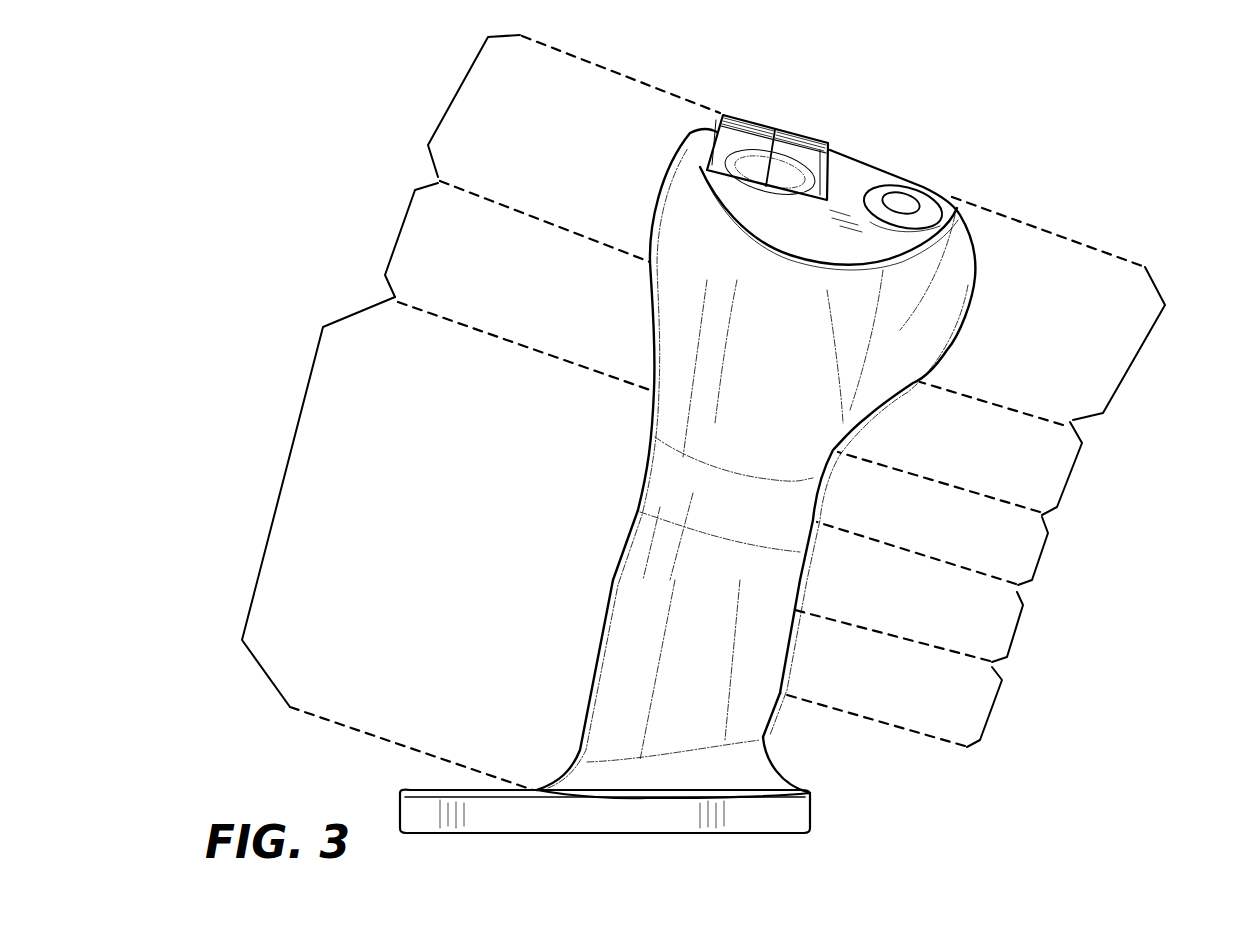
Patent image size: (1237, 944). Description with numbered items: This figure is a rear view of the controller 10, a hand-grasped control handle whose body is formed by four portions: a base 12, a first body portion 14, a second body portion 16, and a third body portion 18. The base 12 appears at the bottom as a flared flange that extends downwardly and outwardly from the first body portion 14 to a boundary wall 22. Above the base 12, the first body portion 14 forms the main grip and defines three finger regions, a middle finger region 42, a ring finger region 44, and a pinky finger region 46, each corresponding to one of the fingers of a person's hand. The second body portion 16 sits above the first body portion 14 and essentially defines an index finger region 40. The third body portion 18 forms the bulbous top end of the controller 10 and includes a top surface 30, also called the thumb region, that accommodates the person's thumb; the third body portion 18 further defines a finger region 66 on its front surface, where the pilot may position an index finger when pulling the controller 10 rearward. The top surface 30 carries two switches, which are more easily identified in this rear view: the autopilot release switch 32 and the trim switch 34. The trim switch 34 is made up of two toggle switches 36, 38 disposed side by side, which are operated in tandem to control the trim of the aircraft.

The controller 10 is at (600, 568).
The base 12 is at (413, 792).
The first body portion 14 is at (288, 462).
The second body portion 16 is at (400, 234).
The third body portion 18 is at (461, 88).
The boundary wall 22 is at (552, 822).
The top surface 30 is at (897, 237).
The autopilot release switch 32 is at (913, 203).
The trim switch 34 is at (817, 128).
The toggle switch 36 is at (757, 118).
The toggle switch 38 is at (805, 137).
The index finger region 40 is at (1071, 472).
The middle finger region 42 is at (1044, 548).
The ring finger region 44 is at (1016, 627).
The pinky finger region 46 is at (990, 713).
The finger region 66 is at (1139, 350).